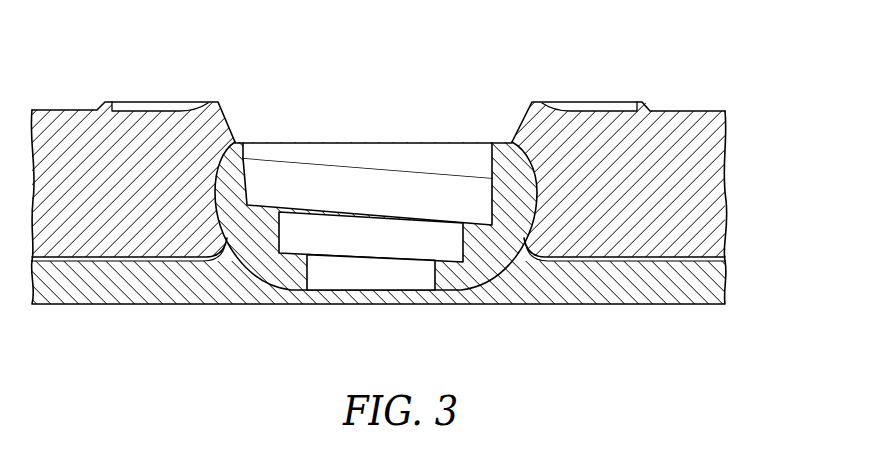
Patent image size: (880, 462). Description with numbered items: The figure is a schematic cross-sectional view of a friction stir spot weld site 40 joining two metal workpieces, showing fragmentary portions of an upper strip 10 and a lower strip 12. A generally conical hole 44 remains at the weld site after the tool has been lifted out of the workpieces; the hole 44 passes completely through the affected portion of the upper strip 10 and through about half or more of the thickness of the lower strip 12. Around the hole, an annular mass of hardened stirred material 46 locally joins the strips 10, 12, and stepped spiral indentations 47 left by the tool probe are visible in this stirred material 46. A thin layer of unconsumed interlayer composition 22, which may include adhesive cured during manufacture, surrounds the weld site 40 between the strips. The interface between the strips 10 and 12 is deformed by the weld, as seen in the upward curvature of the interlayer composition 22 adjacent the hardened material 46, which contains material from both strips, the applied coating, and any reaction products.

The upper strip 10 is at (707, 191).
The lower strip 12 is at (707, 280).
The interlayer composition 22 is at (102, 262).
The friction stir spot weld site 40 is at (486, 93).
The conical hole 44 is at (353, 150).
The hardened stirred material 46 is at (263, 225).
The stepped spiral indentations 47 is at (410, 240).